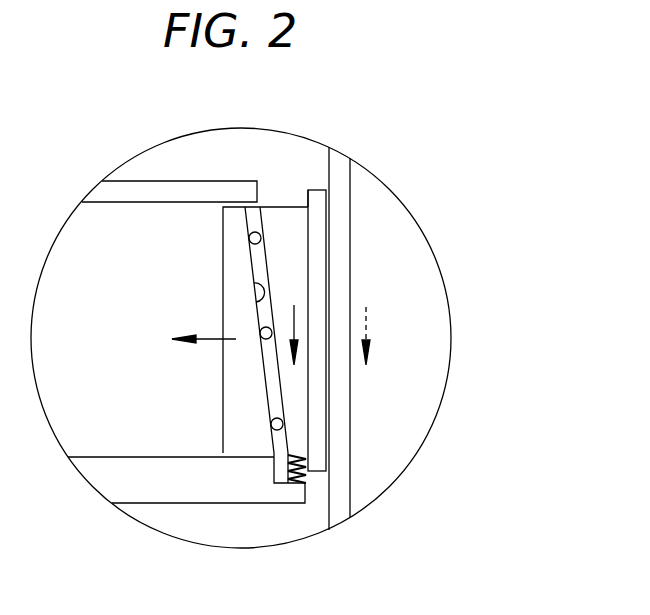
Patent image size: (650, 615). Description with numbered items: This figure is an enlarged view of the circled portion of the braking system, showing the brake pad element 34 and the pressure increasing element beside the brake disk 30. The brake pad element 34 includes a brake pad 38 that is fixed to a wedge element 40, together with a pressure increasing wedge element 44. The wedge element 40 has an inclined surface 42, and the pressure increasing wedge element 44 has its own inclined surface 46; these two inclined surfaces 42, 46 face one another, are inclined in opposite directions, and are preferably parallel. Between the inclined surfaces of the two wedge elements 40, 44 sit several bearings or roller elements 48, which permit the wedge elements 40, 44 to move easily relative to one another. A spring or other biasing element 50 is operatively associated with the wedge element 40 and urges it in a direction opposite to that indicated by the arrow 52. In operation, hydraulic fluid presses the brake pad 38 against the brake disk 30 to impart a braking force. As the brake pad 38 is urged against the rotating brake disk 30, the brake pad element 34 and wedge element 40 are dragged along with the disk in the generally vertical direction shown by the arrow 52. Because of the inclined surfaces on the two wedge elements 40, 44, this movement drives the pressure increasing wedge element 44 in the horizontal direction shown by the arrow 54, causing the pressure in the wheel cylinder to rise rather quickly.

The brake disk 30 is at (350, 445).
The brake pad element 34 is at (316, 190).
The brake pad 38 is at (317, 472).
The wedge element 40 is at (287, 217).
The inclined surface 42 is at (257, 230).
The pressure increasing wedge element 44 is at (222, 390).
The inclined surface 46 is at (255, 290).
The roller elements 48 is at (261, 237).
The biasing element 50 is at (293, 453).
The arrow 52 is at (296, 320).
The arrow 54 is at (193, 339).